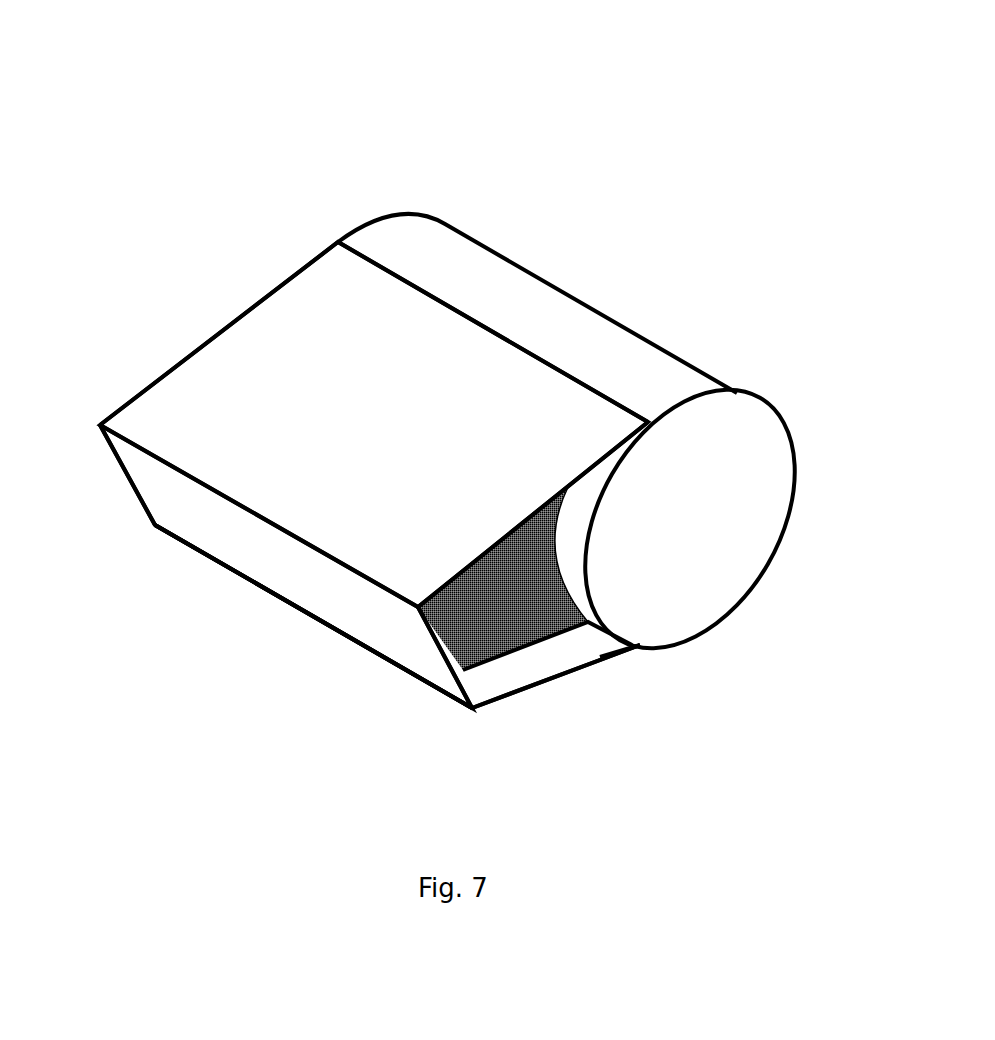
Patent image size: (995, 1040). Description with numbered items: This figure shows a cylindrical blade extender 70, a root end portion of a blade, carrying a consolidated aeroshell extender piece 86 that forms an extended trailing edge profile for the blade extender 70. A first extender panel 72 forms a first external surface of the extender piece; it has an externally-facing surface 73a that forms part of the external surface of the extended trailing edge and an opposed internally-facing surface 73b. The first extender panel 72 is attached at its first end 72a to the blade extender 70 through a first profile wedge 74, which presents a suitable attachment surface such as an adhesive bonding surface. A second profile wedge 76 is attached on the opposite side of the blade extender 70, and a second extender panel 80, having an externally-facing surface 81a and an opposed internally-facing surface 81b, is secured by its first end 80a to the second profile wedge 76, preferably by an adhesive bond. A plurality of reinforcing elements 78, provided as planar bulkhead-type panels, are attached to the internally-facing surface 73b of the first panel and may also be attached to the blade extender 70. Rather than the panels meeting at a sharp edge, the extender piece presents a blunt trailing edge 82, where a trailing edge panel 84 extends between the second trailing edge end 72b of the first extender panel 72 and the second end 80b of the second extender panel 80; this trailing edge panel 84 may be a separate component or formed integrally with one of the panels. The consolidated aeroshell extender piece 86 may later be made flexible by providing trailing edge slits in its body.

The cylindrical blade extender 70 is at (515, 293).
The first extender panel 72 is at (548, 662).
The first end of first extender panel 72a is at (655, 658).
The second trailing edge end of first extender panel 72b is at (417, 692).
The externally-facing surface 73a is at (535, 685).
The internally-facing surface 73b is at (483, 687).
The first profile wedge 74 is at (657, 647).
The second profile wedge 76 is at (630, 450).
The reinforcing elements 78 is at (521, 615).
The second extender panel 80 is at (253, 378).
The first end of second extender panel 80a is at (328, 225).
The second end of second extender panel 80b is at (100, 402).
The externally-facing surface 81a is at (425, 437).
The internally-facing surface 81b is at (585, 477).
The blunt trailing edge 82 is at (258, 635).
The trailing edge panel 84 is at (270, 570).
The consolidated aeroshell extender piece 86 is at (195, 153).